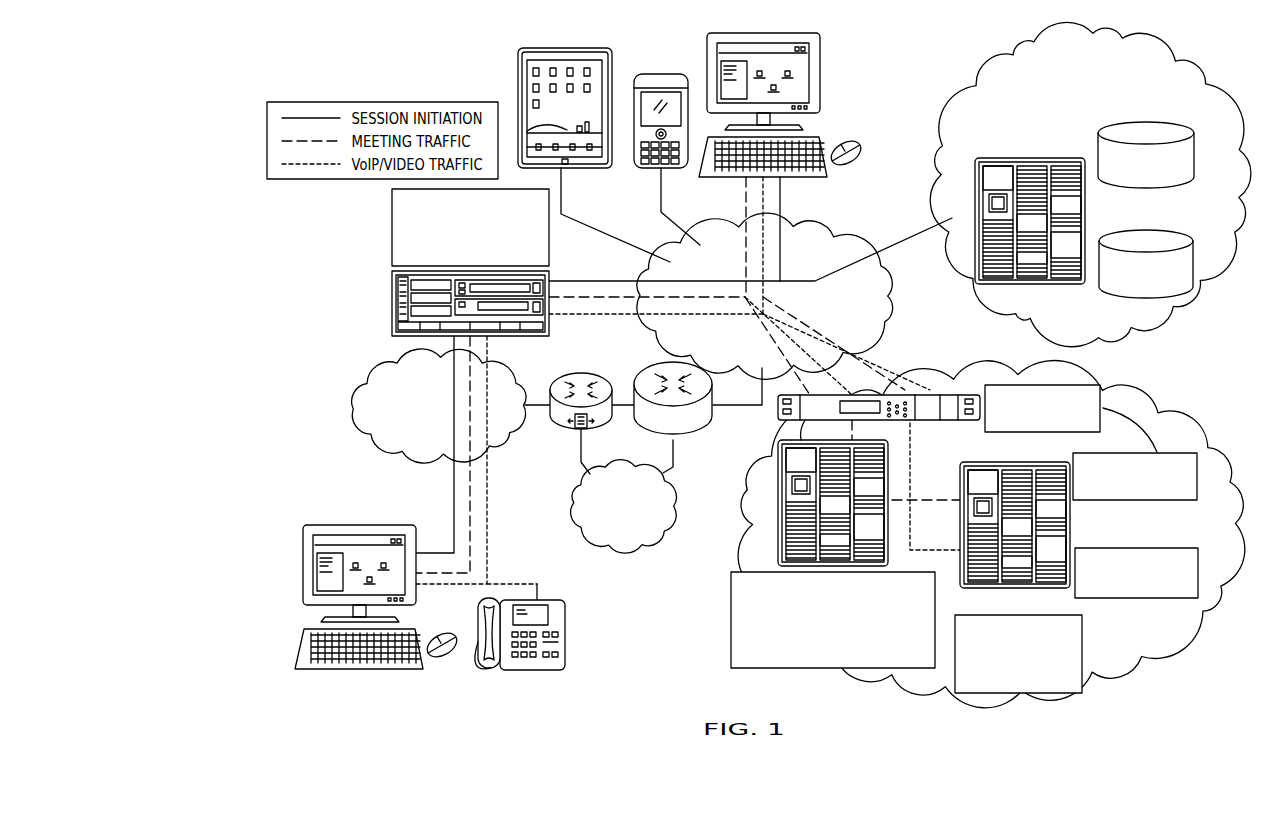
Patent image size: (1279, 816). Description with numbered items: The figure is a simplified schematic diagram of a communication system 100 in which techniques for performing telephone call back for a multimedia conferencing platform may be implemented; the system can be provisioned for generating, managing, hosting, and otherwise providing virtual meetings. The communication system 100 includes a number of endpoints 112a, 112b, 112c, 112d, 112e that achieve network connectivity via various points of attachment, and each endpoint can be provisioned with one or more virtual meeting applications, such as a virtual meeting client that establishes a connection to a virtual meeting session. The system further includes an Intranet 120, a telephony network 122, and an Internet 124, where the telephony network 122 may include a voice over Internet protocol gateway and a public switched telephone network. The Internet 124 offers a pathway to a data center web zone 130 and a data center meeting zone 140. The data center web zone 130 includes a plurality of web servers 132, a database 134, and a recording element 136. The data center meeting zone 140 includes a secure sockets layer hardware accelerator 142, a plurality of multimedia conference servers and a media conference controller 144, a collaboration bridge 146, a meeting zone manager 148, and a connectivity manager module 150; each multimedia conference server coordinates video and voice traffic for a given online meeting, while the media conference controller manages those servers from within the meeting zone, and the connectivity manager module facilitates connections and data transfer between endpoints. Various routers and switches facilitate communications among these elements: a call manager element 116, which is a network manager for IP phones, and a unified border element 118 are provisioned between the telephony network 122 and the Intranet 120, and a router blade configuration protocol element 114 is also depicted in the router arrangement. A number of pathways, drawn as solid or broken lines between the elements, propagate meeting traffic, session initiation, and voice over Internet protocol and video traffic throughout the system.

The communication system 100 is at (352, 293).
The endpoint 112a is at (518, 80).
The endpoint 112b is at (660, 74).
The endpoint 112c is at (822, 70).
The endpoint 112d is at (323, 525).
The endpoint 112e is at (565, 638).
The router blade configuration protocol router 114 is at (392, 232).
The call manager element 116 is at (561, 432).
The unified border element 118 is at (700, 440).
The Intranet 120 is at (381, 376).
The telephony network 122 is at (626, 548).
The Internet 124 is at (815, 245).
The data center web zone 130 is at (1180, 318).
The web servers 132 is at (1003, 158).
The database 134 is at (1135, 186).
The recording element 136 is at (1173, 230).
The data center meeting zone 140 is at (1135, 640).
The secure sockets layer hardware accelerator 142 is at (1100, 402).
The multimedia conference servers/media conference controller 144 is at (730, 615).
The collaboration bridge 146 is at (1130, 500).
The meeting zone manager 148 is at (1172, 548).
The connectivity manager module 150 is at (1082, 680).